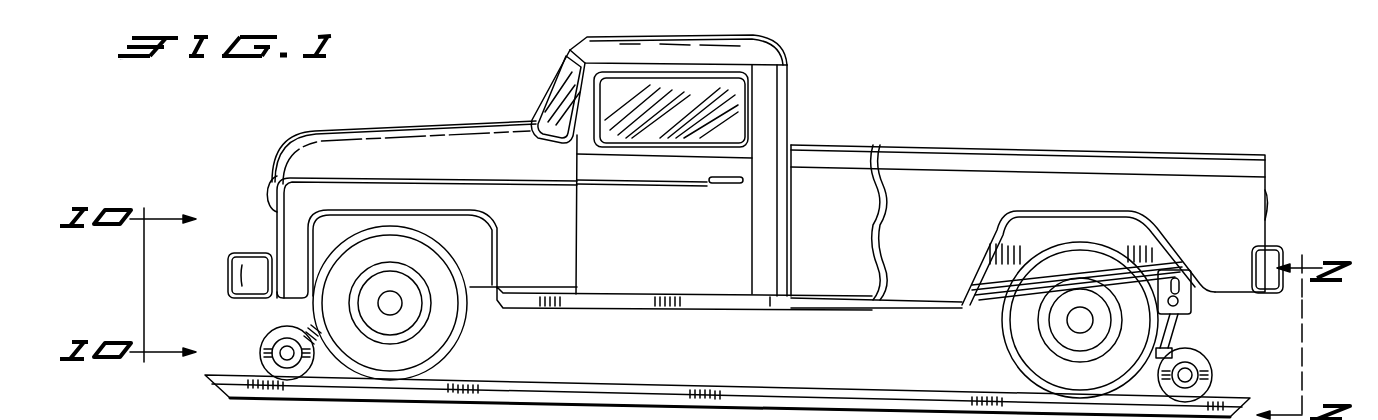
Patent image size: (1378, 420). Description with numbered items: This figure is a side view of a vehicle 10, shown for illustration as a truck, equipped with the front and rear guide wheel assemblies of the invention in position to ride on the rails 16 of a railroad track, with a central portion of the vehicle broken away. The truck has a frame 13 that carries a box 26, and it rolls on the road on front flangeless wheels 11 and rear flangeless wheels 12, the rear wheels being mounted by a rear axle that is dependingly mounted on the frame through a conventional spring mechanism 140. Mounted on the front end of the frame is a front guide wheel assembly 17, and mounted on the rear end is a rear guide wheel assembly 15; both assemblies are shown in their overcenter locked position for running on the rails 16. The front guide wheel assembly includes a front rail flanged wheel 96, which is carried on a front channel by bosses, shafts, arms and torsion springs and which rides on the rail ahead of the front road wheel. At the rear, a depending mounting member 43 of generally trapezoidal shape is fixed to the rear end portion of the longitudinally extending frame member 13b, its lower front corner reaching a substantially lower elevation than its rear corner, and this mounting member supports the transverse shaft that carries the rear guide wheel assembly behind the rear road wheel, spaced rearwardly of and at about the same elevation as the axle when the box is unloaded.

The vehicle 10 is at (797, 67).
The box 26 is at (945, 178).
The frame 13 is at (1138, 253).
The longitudinally extending frame member 13b is at (1007, 259).
The spring mechanism 140 is at (1177, 257).
The mounting member 43 is at (1184, 313).
The front flangeless wheels 11 is at (438, 352).
The rear flangeless wheels 12 is at (1018, 350).
The front rail flanged wheel 96 is at (260, 354).
The front guide wheel assembly 17 is at (256, 325).
The rear guide wheel assembly 15 is at (1220, 371).
The rails 16 is at (683, 390).